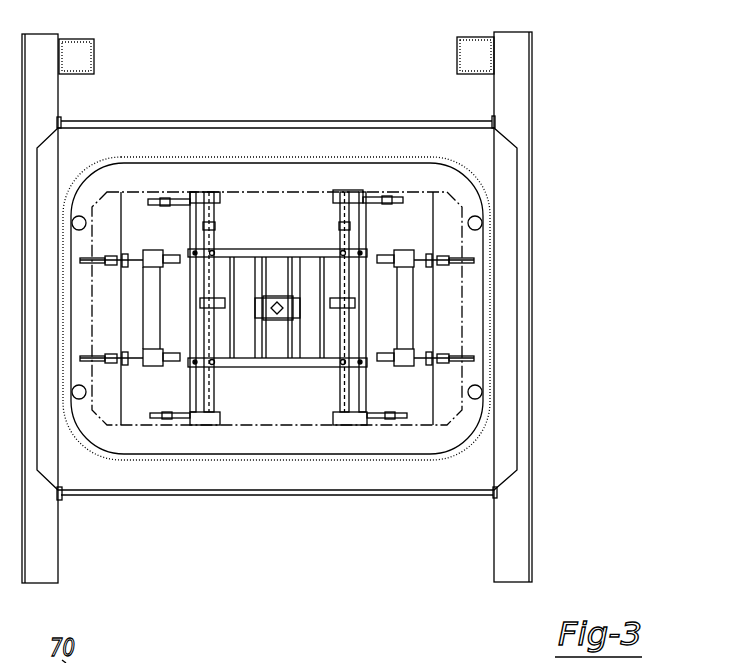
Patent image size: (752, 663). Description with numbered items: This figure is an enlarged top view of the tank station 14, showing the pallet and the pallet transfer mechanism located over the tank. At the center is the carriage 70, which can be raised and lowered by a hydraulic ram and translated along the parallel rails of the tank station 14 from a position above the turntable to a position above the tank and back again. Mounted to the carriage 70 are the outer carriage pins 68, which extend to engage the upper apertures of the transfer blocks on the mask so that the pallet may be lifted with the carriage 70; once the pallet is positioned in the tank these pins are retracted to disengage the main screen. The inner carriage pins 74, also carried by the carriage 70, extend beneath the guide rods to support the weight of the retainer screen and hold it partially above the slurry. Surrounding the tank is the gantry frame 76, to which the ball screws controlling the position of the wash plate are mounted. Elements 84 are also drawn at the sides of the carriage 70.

The tank station 14 is at (572, 272).
The outer carriage pins 68 is at (0, 423).
The carriage 70 is at (278, 251).
The inner carriage pins 74 is at (177, 199).
The gantry frame 76 is at (94, 39).
The adjustment rod 84 is at (0, 355).